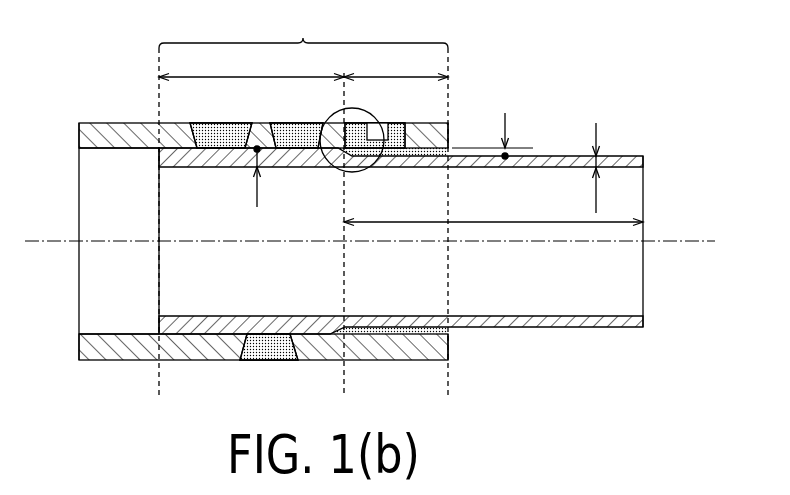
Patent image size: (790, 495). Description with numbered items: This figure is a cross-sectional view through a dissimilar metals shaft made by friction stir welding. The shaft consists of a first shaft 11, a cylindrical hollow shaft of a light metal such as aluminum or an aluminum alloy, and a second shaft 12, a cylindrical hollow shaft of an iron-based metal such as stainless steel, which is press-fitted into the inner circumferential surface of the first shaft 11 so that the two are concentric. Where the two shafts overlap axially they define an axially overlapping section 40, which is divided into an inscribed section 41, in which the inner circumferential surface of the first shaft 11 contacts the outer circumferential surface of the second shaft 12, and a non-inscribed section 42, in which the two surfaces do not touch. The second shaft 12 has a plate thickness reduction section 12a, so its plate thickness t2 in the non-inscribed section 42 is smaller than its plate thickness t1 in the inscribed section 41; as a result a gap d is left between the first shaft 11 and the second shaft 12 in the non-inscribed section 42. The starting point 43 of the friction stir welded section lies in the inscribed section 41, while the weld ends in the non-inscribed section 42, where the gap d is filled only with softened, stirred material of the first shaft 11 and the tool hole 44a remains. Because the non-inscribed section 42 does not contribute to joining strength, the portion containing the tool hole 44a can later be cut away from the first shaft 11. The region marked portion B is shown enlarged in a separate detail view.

The first shaft 11 is at (122, 117).
The second shaft 12 is at (552, 143).
The plate thickness reduction section 12a is at (493, 212).
The axially overlapping section 40 is at (303, 206).
The inscribed section 41 is at (251, 69).
The non-inscribed section 42 is at (396, 69).
The starting point 43 is at (230, 118).
The tool hole 44a is at (388, 123).
The portion B is at (337, 196).
The plate thickness of the inscribed section t1 is at (245, 176).
The plate thickness of the non-inscribed section t2 is at (586, 168).
The gap d is at (492, 136).